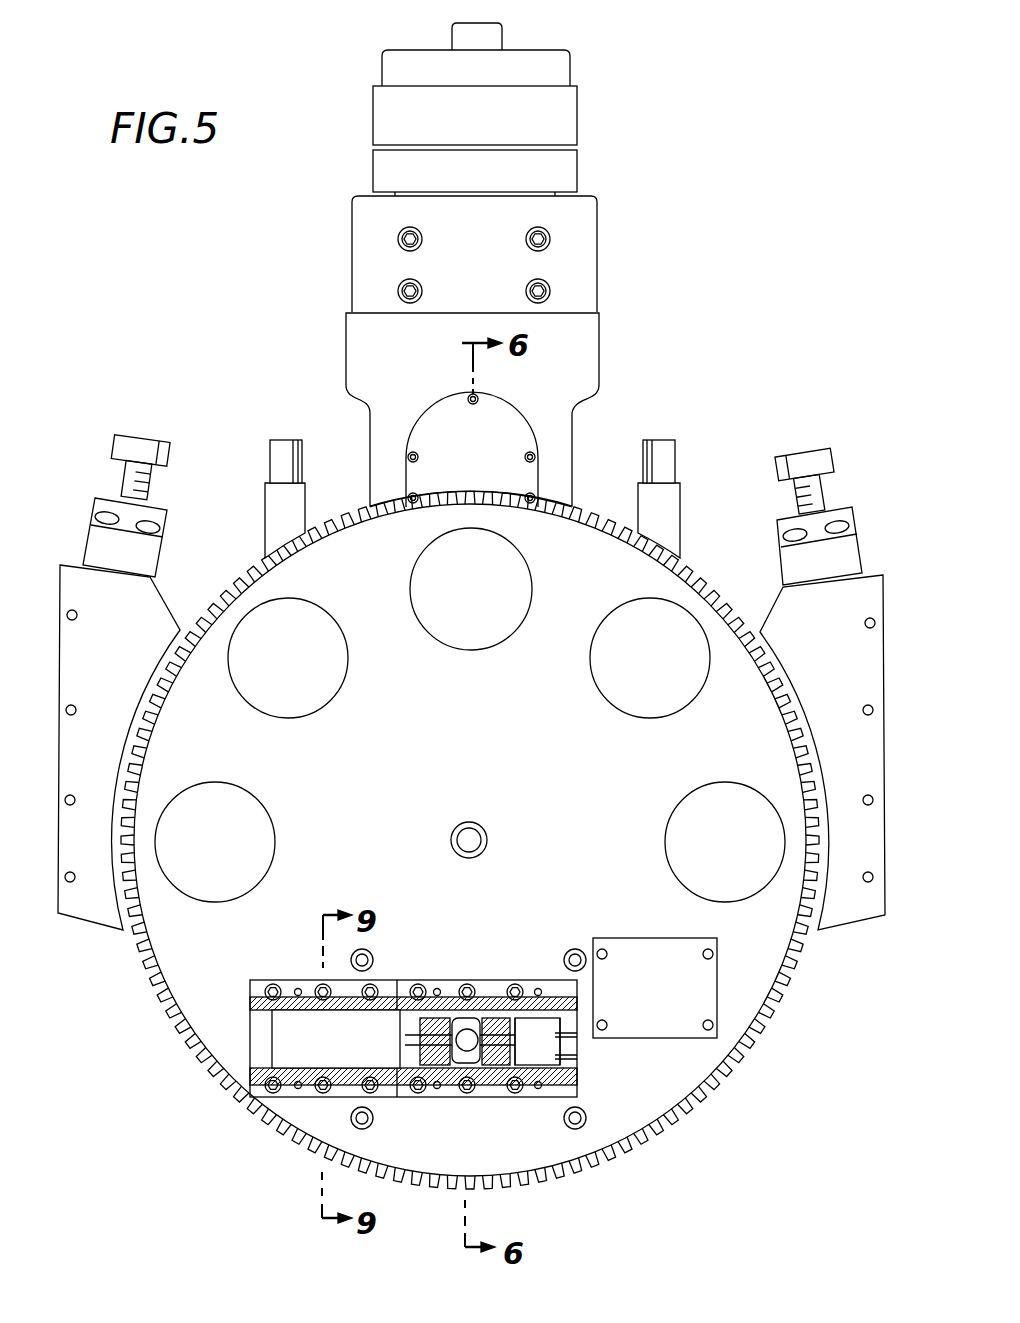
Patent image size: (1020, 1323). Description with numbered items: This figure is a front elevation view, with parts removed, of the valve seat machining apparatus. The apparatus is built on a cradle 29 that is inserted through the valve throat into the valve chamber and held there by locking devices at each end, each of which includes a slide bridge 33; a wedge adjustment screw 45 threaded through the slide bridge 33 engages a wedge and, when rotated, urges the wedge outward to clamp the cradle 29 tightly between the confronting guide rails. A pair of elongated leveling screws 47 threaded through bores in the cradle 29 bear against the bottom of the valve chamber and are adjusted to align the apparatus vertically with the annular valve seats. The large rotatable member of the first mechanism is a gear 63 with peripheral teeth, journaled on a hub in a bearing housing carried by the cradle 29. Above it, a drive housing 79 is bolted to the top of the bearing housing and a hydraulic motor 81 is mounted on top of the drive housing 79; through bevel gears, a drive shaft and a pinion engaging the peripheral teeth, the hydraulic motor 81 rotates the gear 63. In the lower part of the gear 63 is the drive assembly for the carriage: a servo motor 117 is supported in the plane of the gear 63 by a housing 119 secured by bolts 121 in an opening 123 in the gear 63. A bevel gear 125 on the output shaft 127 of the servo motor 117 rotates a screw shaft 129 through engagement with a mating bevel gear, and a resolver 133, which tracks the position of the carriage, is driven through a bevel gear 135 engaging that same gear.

The cradle 29 is at (93, 908).
The slide bridge 33 is at (105, 545).
The wedge adjustment screw 45 is at (130, 470).
The leveling screws 47 is at (286, 440).
The gear 63 is at (187, 700).
The drive housing 79 is at (588, 378).
The hydraulic motor 81 is at (585, 245).
The servo motor 117 is at (385, 1052).
The housing 119 is at (250, 1087).
The bolts 121 is at (517, 990).
The opening 123 is at (278, 1015).
The bevel gear 125 is at (452, 1020).
The output shaft 127 is at (433, 1053).
The screw shaft 129 is at (473, 1030).
The resolver 133 is at (535, 1050).
The bevel gear 135 is at (487, 1063).